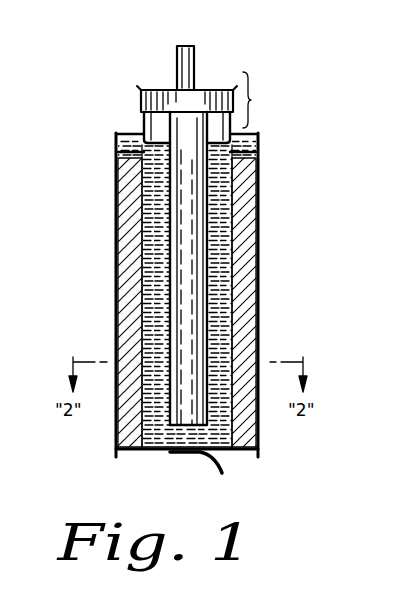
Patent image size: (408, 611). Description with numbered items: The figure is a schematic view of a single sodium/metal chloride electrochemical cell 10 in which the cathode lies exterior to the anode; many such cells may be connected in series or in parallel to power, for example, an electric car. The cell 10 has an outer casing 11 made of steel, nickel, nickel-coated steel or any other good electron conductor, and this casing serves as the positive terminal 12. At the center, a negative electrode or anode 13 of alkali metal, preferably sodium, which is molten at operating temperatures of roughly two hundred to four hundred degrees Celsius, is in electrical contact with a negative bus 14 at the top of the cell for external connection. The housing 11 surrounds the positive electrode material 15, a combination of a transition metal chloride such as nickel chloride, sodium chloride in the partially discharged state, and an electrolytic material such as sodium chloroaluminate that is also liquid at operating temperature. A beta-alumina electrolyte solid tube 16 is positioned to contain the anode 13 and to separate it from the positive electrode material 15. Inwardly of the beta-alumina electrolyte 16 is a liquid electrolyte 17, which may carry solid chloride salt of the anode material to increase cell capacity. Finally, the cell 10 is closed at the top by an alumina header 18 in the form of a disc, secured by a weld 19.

The electrochemical cell 10 is at (42, 171).
The outer casing 11 is at (116, 240).
The positive terminal 12 is at (222, 470).
The anode 13 is at (189, 312).
The negative bus 14 is at (177, 57).
The positive electrode material 15 is at (234, 247).
The beta-alumina electrolyte solid tube 16 is at (209, 202).
The liquid electrolyte 17 is at (228, 288).
The alumina header 18 is at (141, 101).
The weld 19 is at (258, 133).